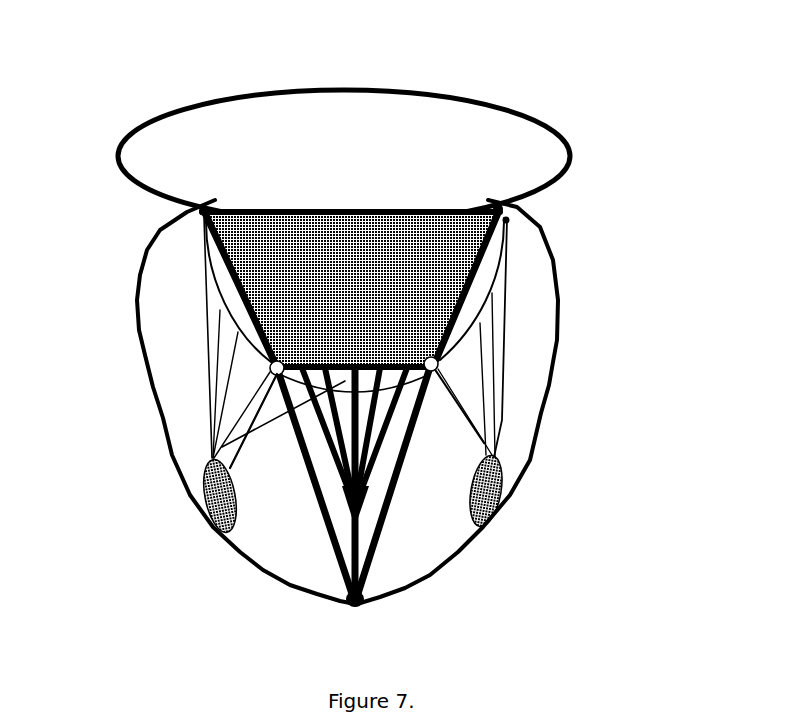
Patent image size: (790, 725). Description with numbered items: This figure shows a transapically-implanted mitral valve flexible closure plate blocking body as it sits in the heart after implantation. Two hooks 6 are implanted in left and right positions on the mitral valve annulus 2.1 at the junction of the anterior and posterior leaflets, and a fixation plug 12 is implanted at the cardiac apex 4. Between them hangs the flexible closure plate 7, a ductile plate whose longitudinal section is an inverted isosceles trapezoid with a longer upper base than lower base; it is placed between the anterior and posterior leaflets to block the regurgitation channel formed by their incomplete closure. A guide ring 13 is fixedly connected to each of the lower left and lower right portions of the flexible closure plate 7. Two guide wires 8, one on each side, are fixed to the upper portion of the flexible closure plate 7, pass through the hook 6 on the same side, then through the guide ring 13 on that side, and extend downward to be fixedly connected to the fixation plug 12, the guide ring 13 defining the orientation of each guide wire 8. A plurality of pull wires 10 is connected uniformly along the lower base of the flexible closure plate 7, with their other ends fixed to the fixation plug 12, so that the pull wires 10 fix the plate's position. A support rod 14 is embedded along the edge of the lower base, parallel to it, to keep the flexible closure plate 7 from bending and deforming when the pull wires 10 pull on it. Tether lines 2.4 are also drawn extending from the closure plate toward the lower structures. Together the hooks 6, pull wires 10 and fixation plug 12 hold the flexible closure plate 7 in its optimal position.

The hook 6 is at (218, 201).
The flexible closure plate 7 is at (317, 270).
The mitral valve annulus 2.1 is at (493, 253).
The guide ring 13 is at (286, 364).
The tether lines 2.4 is at (475, 416).
The pull wire 10 is at (379, 451).
The support rod 14 is at (390, 378).
The guide wire 8 is at (387, 532).
The cardiac apex 4 is at (362, 607).
The fixation plug 12 is at (337, 607).